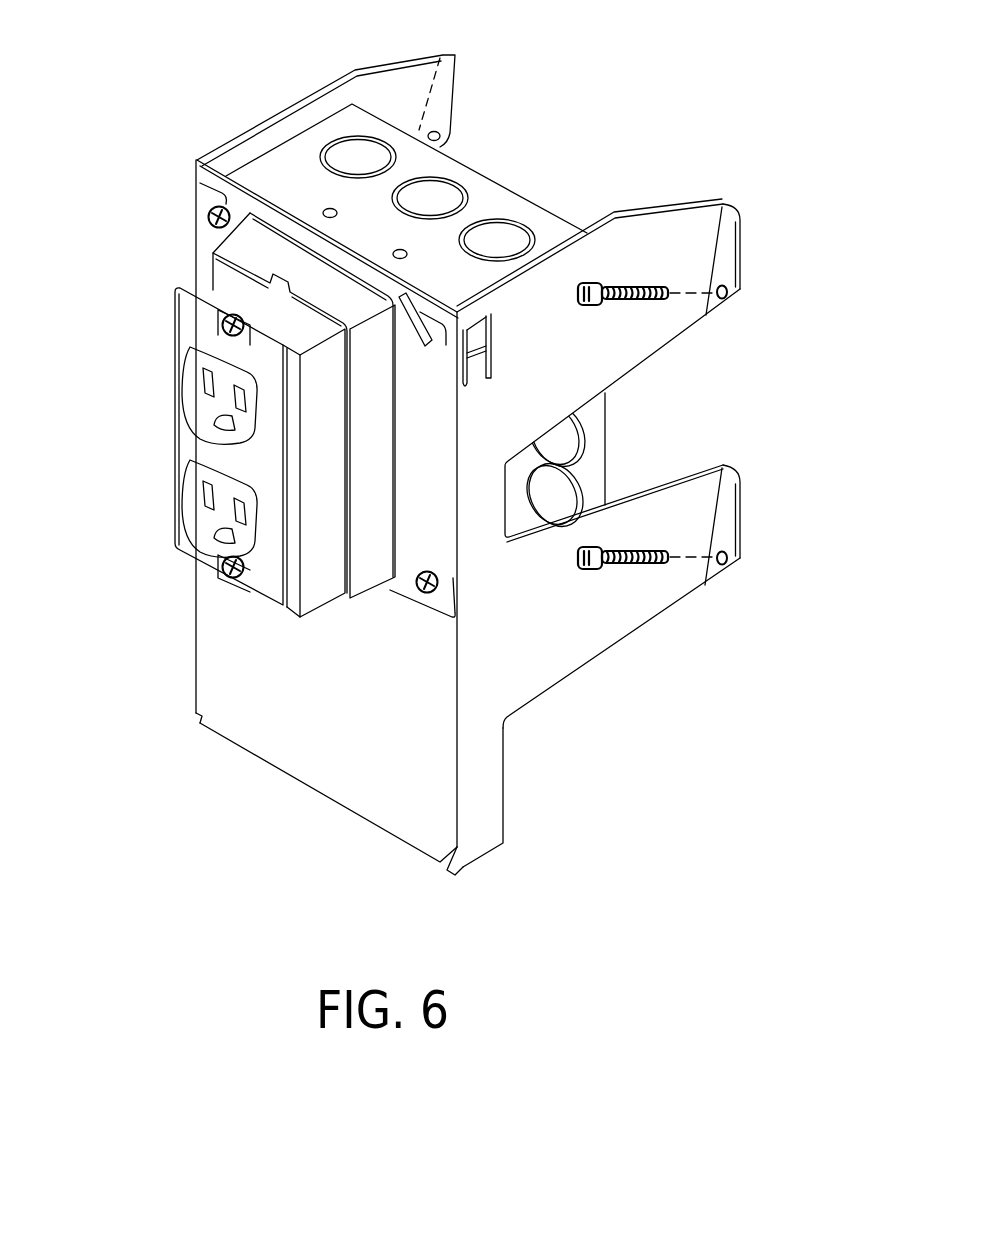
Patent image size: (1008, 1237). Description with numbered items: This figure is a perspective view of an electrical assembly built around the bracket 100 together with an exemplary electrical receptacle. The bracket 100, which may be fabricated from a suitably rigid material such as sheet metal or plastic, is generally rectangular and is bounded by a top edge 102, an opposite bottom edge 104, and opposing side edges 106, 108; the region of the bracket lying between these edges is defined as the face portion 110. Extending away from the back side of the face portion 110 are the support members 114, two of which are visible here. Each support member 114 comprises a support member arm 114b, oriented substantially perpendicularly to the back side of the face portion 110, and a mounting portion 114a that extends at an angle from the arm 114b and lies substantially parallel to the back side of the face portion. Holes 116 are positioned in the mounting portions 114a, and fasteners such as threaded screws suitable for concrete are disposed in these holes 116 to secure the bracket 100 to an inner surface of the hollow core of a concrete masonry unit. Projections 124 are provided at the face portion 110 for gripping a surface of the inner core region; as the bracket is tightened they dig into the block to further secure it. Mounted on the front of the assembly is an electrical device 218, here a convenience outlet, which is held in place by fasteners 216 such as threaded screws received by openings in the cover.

The bracket 100 is at (197, 166).
The top edge 102 is at (270, 198).
The bottom edge 104 is at (361, 818).
The side edge 106 is at (196, 660).
The side edge 108 is at (460, 790).
The face portion 110 is at (303, 713).
The support member 114 is at (640, 235).
The mounting portion 114a is at (733, 255).
The support member arm 114b is at (600, 385).
The hole 116 is at (437, 140).
The projection 124 is at (200, 725).
The fastener 216 is at (250, 320).
The electrical device 218 is at (197, 480).